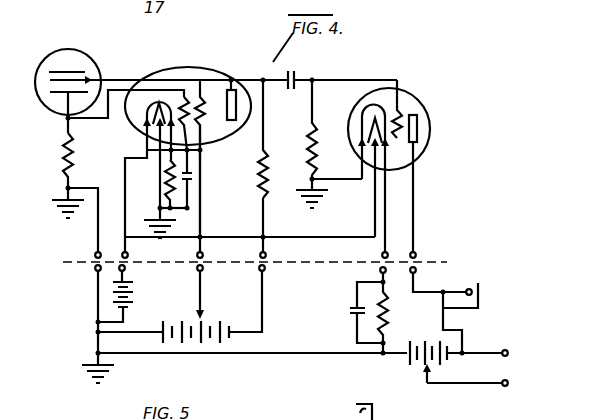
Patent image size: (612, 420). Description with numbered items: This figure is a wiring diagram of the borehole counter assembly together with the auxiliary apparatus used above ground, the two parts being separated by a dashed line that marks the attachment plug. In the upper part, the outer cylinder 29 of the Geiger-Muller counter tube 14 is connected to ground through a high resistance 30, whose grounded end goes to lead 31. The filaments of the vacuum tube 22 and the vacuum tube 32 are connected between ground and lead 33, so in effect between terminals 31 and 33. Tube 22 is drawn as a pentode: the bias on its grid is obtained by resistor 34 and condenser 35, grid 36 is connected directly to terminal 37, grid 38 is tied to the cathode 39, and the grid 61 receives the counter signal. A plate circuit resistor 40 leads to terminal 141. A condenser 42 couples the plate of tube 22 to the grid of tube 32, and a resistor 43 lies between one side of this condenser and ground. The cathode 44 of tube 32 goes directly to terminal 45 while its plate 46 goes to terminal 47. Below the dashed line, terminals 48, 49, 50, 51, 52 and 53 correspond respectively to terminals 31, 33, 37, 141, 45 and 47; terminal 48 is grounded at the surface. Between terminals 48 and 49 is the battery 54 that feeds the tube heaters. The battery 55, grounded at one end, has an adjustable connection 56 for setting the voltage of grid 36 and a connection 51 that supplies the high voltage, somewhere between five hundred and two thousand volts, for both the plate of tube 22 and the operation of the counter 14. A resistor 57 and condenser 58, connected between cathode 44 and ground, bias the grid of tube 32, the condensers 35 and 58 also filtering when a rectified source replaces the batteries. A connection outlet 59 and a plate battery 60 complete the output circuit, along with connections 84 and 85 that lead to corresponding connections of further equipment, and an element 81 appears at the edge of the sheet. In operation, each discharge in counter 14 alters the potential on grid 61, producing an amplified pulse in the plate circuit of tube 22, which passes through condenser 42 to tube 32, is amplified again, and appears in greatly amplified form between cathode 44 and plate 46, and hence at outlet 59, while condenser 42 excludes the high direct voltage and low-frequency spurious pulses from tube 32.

The Geiger-Muller counter tube 14 is at (72, 52).
The vacuum tube 22 is at (164, 64).
The outer cylinder 29 is at (53, 98).
The high resistance 30 is at (64, 158).
The lead 31 is at (95, 255).
The vacuum tube 32 is at (423, 96).
The lead 33 is at (128, 257).
The resistor 34 is at (166, 167).
The condenser 35 is at (193, 188).
The grid 36 is at (205, 96).
The terminal 37 is at (210, 250).
The grid 38 is at (212, 148).
The cathode 39 is at (213, 142).
The plate circuit resistor 40 is at (267, 172).
The terminal 141 is at (272, 250).
The condenser 42 is at (314, 66).
The resistor 43 is at (309, 130).
The cathode 44 is at (365, 103).
The terminal 45 is at (381, 255).
The plate 46 is at (418, 128).
The terminal 47 is at (416, 253).
The terminal 48 is at (95, 272).
The terminal 49 is at (125, 268).
The terminal 50 is at (203, 270).
The connection 51 is at (264, 270).
The terminal 52 is at (380, 271).
The terminal 53 is at (417, 270).
The battery 54 is at (110, 298).
The battery 55 is at (224, 308).
The adjustable connection 56 is at (197, 315).
The resistor 57 is at (389, 316).
The condenser 58 is at (352, 310).
The connection outlet 59 is at (478, 283).
The plate battery 60 is at (457, 330).
The grid 61 is at (187, 96).
The relay 81 is at (350, 406).
The connection 84 is at (506, 341).
The connection 85 is at (507, 386).